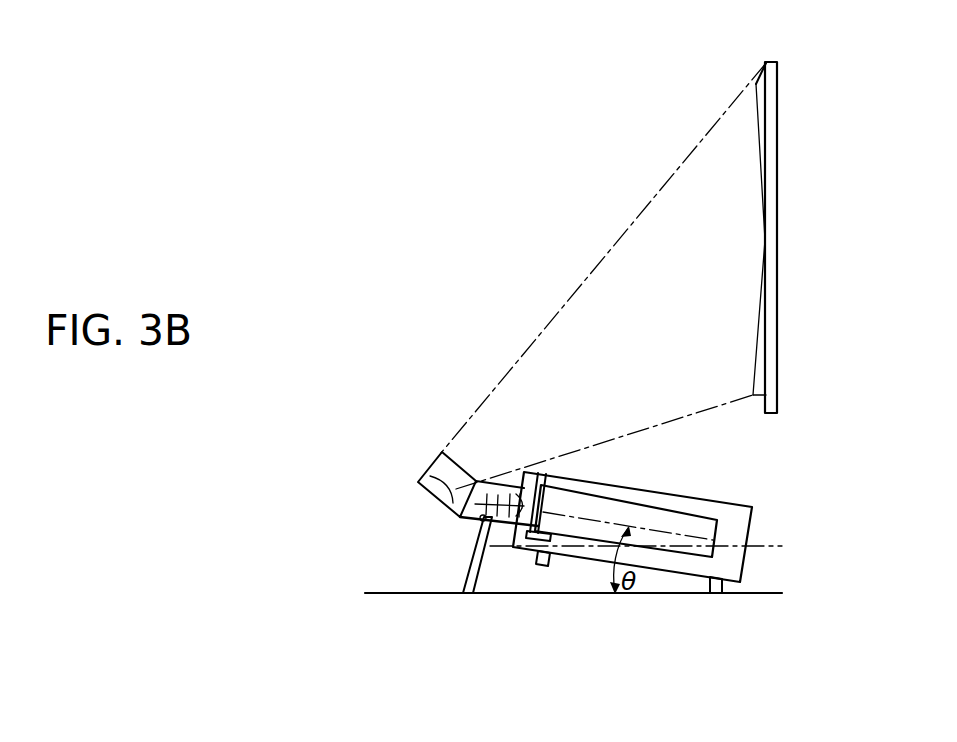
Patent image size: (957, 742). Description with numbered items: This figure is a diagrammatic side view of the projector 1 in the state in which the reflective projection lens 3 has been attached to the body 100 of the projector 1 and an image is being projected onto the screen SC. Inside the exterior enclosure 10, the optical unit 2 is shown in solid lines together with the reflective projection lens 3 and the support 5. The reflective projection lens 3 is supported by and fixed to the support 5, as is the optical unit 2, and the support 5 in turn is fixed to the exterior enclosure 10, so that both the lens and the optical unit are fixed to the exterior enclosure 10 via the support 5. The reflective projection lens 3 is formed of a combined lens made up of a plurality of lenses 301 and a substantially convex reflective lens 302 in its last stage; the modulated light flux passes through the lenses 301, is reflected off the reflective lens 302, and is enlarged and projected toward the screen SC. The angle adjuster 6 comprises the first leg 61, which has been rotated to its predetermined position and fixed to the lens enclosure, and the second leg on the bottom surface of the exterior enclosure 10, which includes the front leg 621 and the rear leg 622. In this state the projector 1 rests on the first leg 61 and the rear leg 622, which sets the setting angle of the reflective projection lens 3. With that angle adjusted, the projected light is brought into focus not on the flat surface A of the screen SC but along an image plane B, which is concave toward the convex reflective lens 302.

The projector 1 is at (756, 469).
The body 100 is at (673, 493).
The exterior enclosure 10 is at (723, 493).
The optical unit 2 is at (588, 493).
The support 5 is at (548, 493).
The reflective projection lens 3 is at (415, 518).
The lenses 301 is at (473, 505).
The reflective lens 302 is at (422, 473).
The angle adjuster 6 is at (472, 656).
The first leg 61 is at (465, 572).
The front leg 621 is at (550, 563).
The rear leg 622 is at (722, 587).
The screen SC is at (778, 163).
The flat surface A is at (770, 82).
The image plane B is at (757, 113).